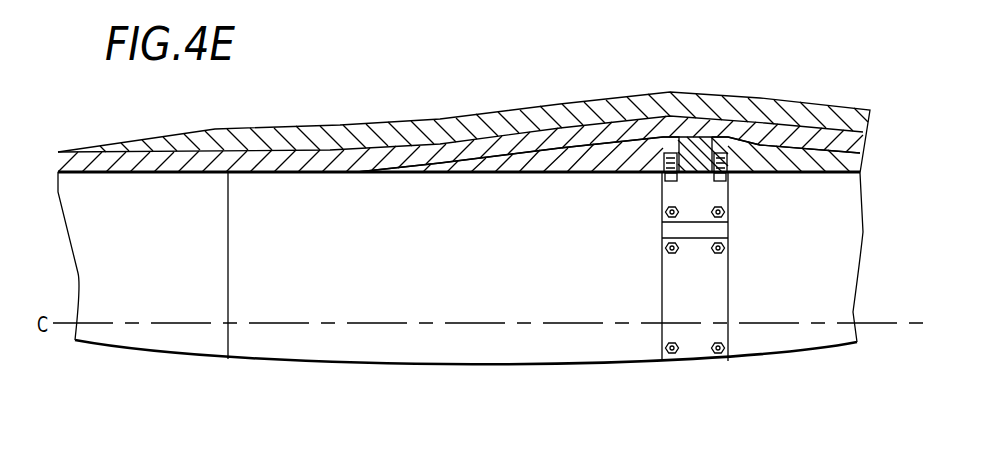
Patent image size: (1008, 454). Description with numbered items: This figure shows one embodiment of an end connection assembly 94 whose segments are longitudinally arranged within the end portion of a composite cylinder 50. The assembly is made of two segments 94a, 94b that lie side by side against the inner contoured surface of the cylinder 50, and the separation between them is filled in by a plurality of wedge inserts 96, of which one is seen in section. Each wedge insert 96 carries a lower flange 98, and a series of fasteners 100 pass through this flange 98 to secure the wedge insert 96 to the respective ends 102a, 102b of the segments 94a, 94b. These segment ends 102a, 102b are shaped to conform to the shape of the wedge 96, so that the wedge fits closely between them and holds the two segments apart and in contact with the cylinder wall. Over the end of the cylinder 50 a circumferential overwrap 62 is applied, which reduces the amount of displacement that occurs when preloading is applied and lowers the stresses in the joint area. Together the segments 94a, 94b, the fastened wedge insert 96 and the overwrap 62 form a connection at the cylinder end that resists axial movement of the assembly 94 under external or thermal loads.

The composite cylinder 50 is at (82, 151).
The circumferential overwrap 62 is at (325, 132).
The end connection assembly 94 is at (607, 140).
The segment 94a is at (577, 157).
The segment 94b is at (770, 150).
The wedge insert 96 is at (693, 137).
The lower flange 98 is at (660, 163).
The fastener 100 is at (665, 213).
The end of segment 102a is at (670, 138).
The end of segment 102b is at (713, 140).